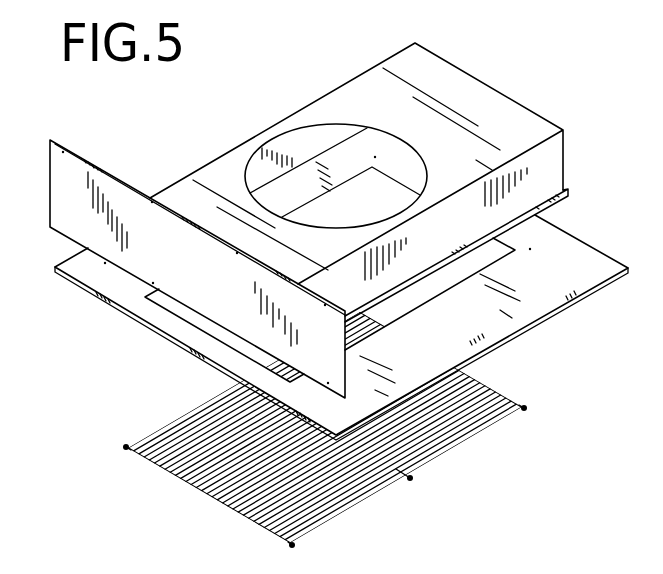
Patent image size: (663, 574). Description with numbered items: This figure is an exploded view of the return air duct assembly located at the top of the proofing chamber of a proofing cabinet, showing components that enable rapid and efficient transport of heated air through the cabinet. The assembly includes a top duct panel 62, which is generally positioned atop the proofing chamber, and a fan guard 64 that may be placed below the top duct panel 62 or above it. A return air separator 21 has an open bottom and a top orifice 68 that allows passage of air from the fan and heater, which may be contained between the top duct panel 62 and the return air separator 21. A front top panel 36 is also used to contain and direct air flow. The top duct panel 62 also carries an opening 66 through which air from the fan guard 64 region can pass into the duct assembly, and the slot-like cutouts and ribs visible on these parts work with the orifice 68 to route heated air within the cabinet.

The return air separator 21 is at (493, 93).
The front top panel 36 is at (57, 184).
The top duct panel 62 is at (595, 267).
The fan guard 64 is at (510, 398).
The opening 66 is at (502, 250).
The top orifice 68 is at (288, 146).